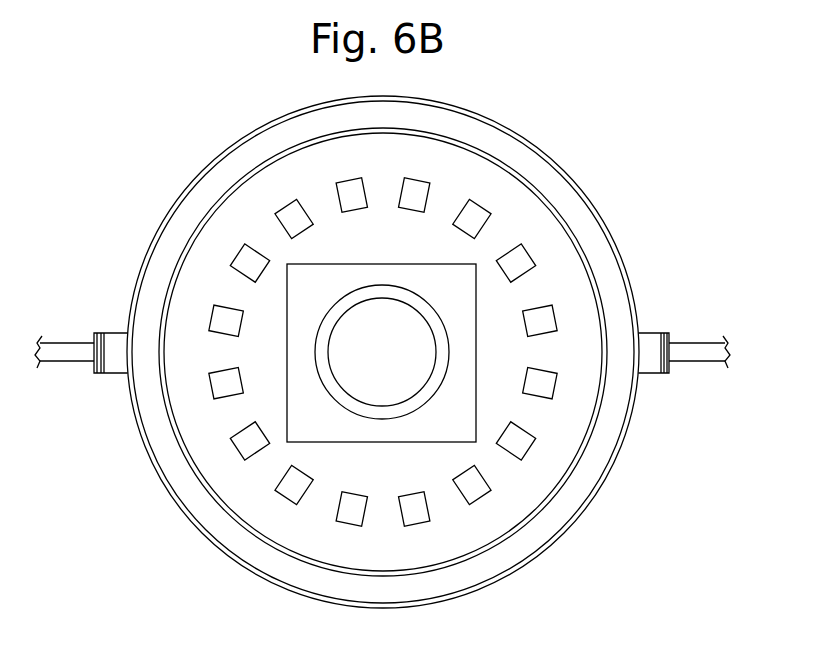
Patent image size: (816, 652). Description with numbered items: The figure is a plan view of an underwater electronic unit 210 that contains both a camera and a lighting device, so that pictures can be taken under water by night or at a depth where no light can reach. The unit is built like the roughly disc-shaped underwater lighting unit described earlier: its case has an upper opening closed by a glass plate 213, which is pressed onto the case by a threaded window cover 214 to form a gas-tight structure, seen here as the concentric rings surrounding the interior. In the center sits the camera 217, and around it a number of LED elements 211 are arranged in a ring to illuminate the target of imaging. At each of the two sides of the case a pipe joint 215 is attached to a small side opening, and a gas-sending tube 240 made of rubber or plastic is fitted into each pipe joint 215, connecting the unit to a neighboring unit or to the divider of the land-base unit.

The underwater electronic unit 210 is at (404, 349).
The LED elements 211 is at (477, 203).
The glass plate 213 is at (565, 277).
The threaded window cover 214 is at (565, 198).
The pipe joint 215 is at (117, 360).
The camera 217 is at (287, 264).
The gas-sending tube 240 is at (690, 342).